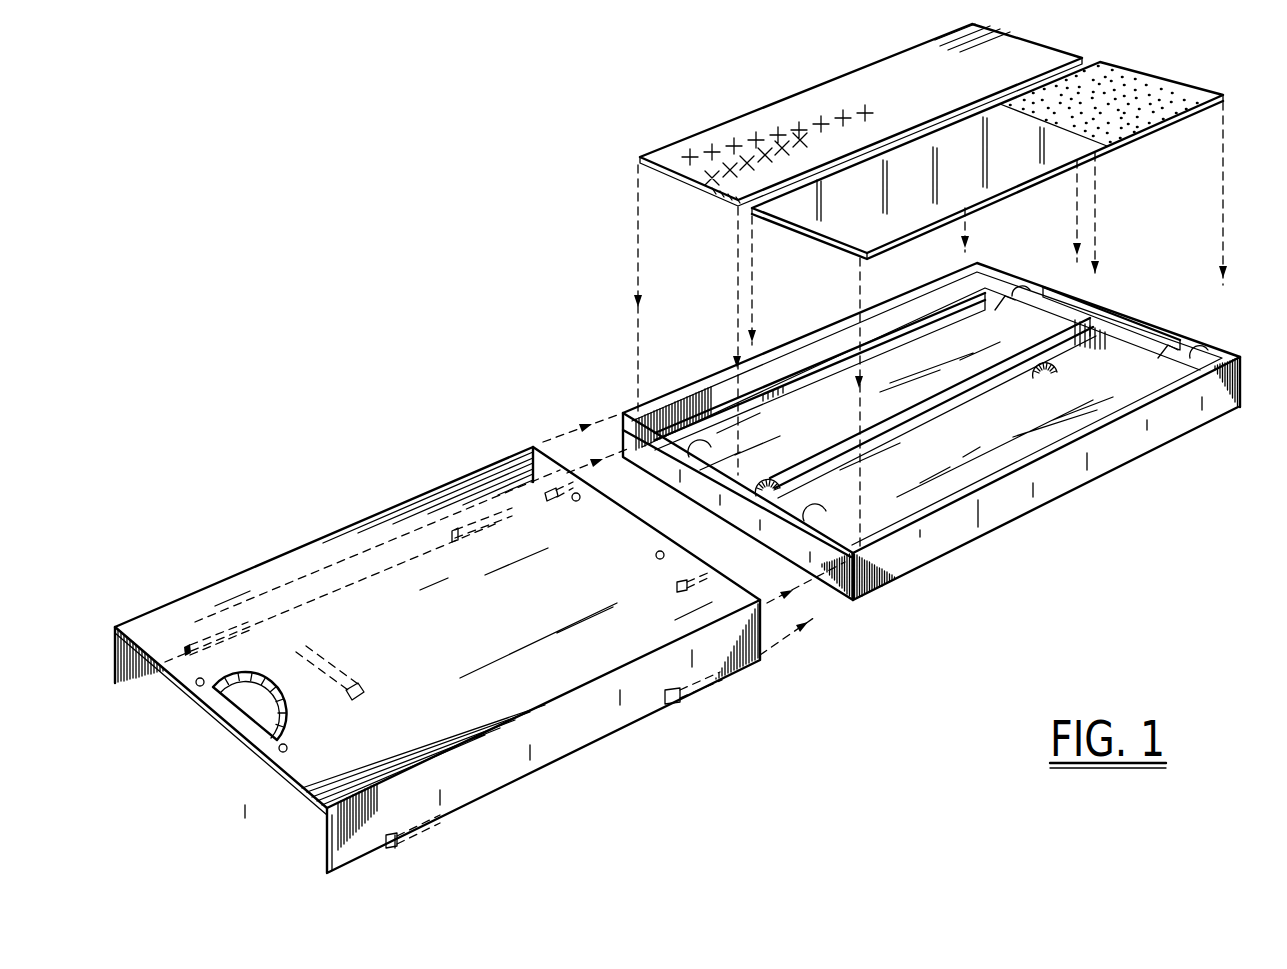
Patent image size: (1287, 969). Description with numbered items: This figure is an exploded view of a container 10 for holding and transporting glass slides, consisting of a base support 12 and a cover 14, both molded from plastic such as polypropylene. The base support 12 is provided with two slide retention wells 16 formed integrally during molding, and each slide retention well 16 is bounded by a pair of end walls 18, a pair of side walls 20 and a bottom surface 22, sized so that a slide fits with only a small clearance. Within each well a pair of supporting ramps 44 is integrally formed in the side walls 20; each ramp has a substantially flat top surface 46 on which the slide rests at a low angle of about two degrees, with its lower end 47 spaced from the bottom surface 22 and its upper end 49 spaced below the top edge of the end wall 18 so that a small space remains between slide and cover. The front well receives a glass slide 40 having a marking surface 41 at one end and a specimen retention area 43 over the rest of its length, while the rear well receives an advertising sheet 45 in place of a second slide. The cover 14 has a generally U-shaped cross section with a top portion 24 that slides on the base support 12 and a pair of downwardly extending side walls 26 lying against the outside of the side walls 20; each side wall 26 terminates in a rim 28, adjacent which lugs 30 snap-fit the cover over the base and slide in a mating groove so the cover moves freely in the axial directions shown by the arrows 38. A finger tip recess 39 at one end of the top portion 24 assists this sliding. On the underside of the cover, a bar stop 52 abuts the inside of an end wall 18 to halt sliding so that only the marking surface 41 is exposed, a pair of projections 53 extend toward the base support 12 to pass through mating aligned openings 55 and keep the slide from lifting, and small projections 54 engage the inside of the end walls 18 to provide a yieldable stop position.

The container 10 is at (647, 749).
The base support 12 is at (1128, 480).
The cover 14 is at (558, 773).
The slide retention well 16 is at (982, 300).
The end walls 18 is at (1020, 288).
The side walls 20 is at (708, 398).
The bottom surface 22 is at (796, 446).
The top portion 24 is at (300, 765).
The side walls 26 is at (112, 660).
The rim 28 is at (132, 684).
The lugs 30 is at (235, 645).
The arrows 38 is at (556, 440).
The finger tip recess 39 is at (240, 710).
The glass slide 40 is at (1152, 60).
The marking surface 41 is at (1193, 87).
The specimen retention area 43 is at (850, 228).
The supporting ramps 44 is at (903, 335).
The advertising sheet 45 is at (1030, 50).
The top surface 46 is at (803, 367).
The lower end 47 is at (1083, 312).
The upper end 49 is at (758, 512).
The bar stop 52 is at (345, 672).
The projections 53 is at (558, 500).
The projections 54 is at (195, 675).
The opening 55 is at (1013, 297).